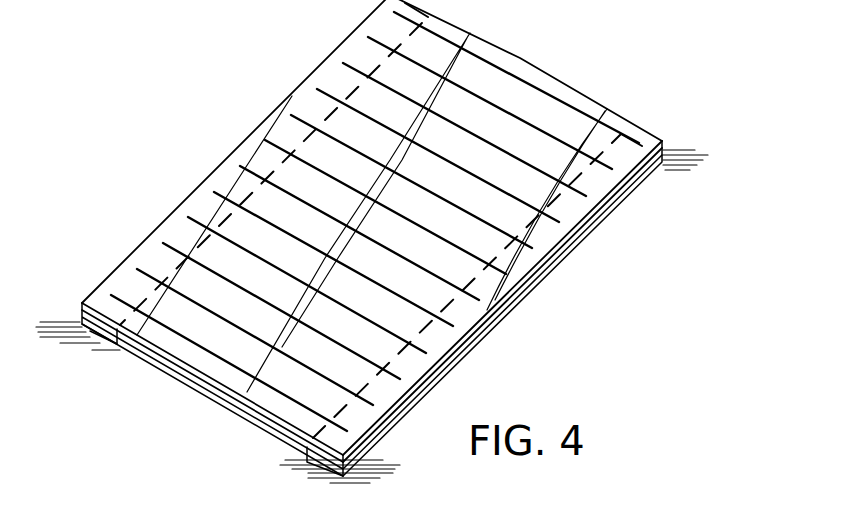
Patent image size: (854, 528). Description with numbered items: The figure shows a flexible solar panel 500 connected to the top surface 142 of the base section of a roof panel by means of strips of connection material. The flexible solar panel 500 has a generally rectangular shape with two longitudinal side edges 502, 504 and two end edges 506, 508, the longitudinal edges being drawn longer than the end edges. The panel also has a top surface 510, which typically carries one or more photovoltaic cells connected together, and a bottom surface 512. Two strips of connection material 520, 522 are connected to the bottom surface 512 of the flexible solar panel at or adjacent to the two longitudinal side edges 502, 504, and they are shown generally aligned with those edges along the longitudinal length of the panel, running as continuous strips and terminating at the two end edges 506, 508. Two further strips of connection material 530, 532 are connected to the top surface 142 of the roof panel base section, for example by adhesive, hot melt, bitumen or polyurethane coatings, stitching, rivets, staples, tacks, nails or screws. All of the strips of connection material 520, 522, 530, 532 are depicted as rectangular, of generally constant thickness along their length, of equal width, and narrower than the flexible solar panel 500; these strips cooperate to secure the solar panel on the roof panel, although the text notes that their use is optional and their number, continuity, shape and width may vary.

The flexible solar panel 500 is at (290, 78).
The longitudinal side edge 502 is at (190, 195).
The longitudinal side edge 504 is at (517, 297).
The end edge 506 is at (515, 53).
The end edge 508 is at (193, 375).
The top surface 510 is at (548, 118).
The bottom surface 512 is at (252, 410).
The strip of connection material 520 is at (88, 326).
The strip of connection material 522 is at (460, 360).
The strip of connection material 530 is at (95, 340).
The strip of connection material 532 is at (447, 380).
The top surface 142 is at (688, 155).